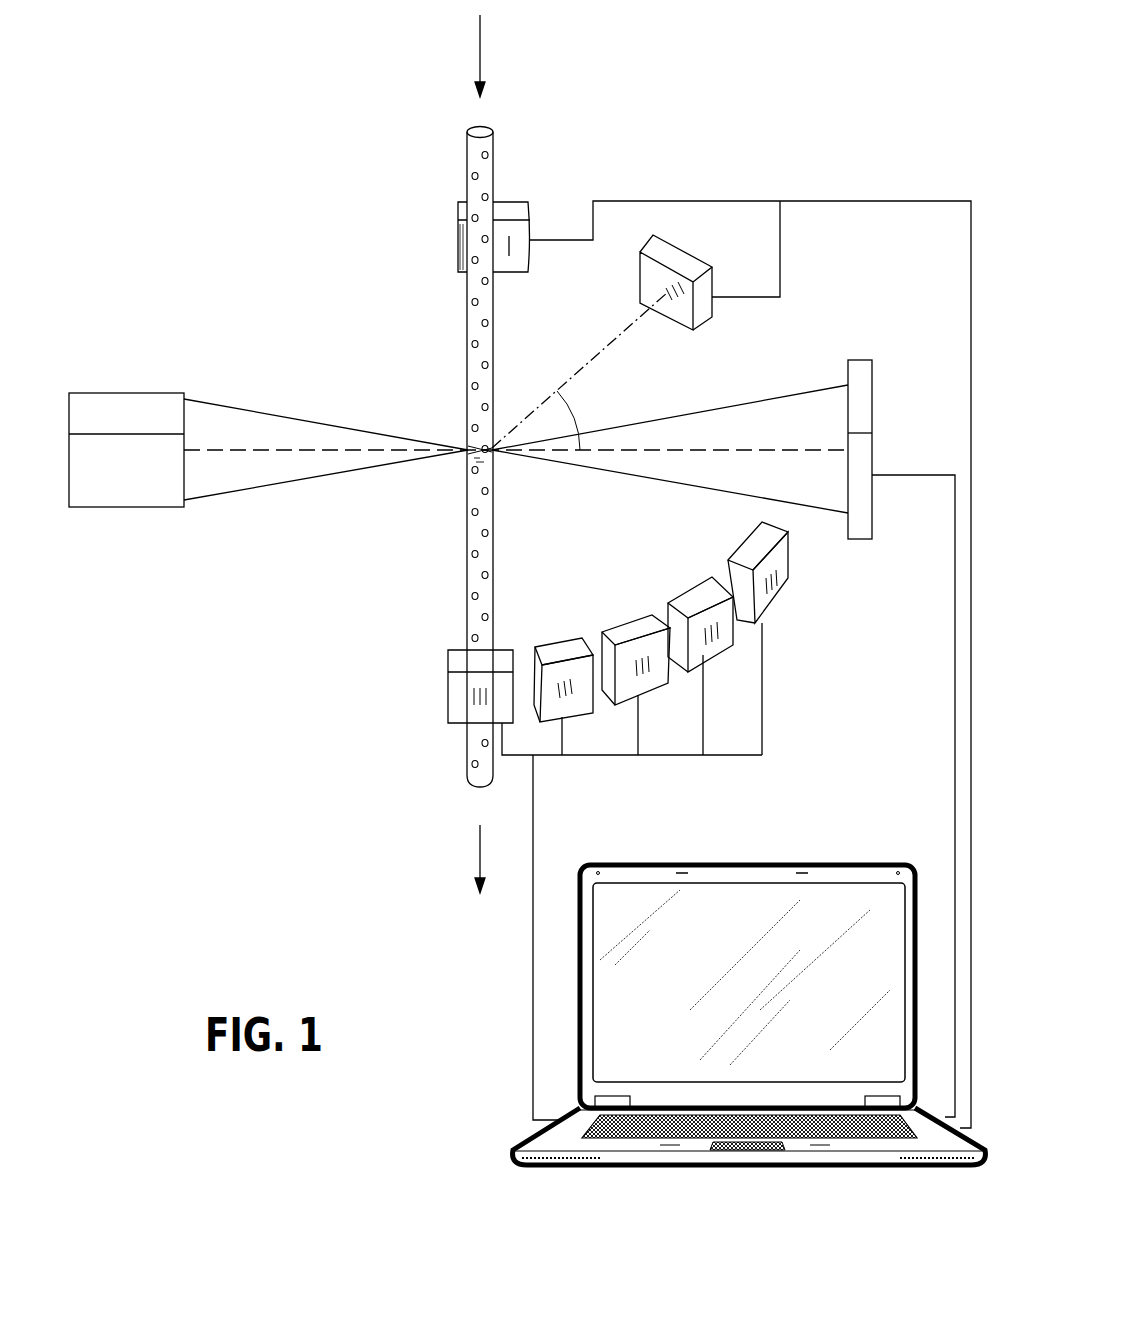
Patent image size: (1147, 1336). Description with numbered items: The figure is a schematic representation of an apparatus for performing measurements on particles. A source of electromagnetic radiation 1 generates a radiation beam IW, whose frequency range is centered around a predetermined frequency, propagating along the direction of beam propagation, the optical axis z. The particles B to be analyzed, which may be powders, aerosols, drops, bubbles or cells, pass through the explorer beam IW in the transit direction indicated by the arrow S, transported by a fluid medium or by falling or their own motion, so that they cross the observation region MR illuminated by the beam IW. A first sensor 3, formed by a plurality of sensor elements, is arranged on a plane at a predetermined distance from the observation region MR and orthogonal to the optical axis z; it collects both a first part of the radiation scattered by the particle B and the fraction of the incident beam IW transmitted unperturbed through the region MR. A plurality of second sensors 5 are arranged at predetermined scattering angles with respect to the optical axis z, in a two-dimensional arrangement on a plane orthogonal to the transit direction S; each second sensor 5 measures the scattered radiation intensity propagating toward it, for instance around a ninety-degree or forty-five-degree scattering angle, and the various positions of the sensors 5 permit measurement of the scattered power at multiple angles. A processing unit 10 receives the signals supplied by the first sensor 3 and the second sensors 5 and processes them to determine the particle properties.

The source of electromagnetic radiation 1 is at (137, 392).
The first sensor 3 is at (874, 400).
The second sensor 5 is at (508, 212).
The processing unit 10 is at (665, 1167).
The transit direction S is at (479, 64).
The particles B is at (467, 341).
The radiation beam IW is at (280, 395).
The observation region MR is at (463, 440).
The optical axis z is at (238, 453).